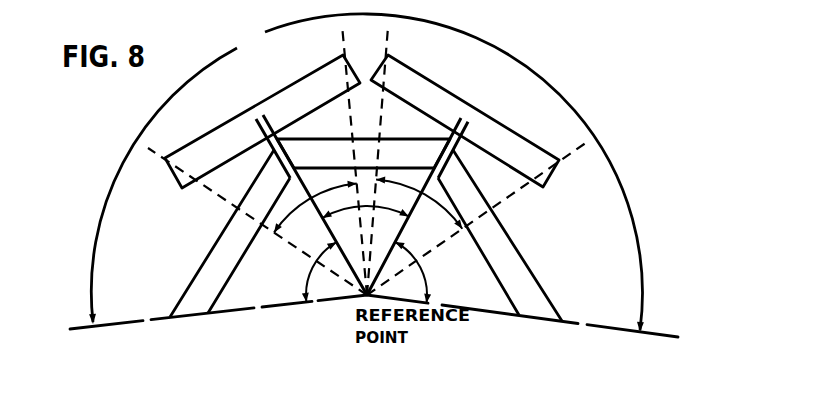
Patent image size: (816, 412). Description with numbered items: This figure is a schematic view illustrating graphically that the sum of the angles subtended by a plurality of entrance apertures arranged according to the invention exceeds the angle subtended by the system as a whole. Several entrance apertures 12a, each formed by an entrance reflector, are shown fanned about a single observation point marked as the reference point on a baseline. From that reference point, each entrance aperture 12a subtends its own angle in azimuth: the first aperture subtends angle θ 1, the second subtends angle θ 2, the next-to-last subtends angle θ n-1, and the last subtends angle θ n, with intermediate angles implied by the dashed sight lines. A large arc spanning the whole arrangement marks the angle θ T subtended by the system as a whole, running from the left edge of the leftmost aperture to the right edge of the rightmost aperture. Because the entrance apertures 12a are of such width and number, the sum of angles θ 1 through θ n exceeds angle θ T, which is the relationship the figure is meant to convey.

The entrance aperture 12a is at (246, 110).
The angle subtended by the system as a whole T is at (366, 173).
The angle subtended by the first entrance aperture 1 is at (319, 272).
The angle subtended by the second entrance aperture 2 is at (341, 207).
The angle subtended by the nth entrance aperture n is at (413, 272).
The angle subtended by the (n-1)th entrance aperture n-1 is at (419, 203).